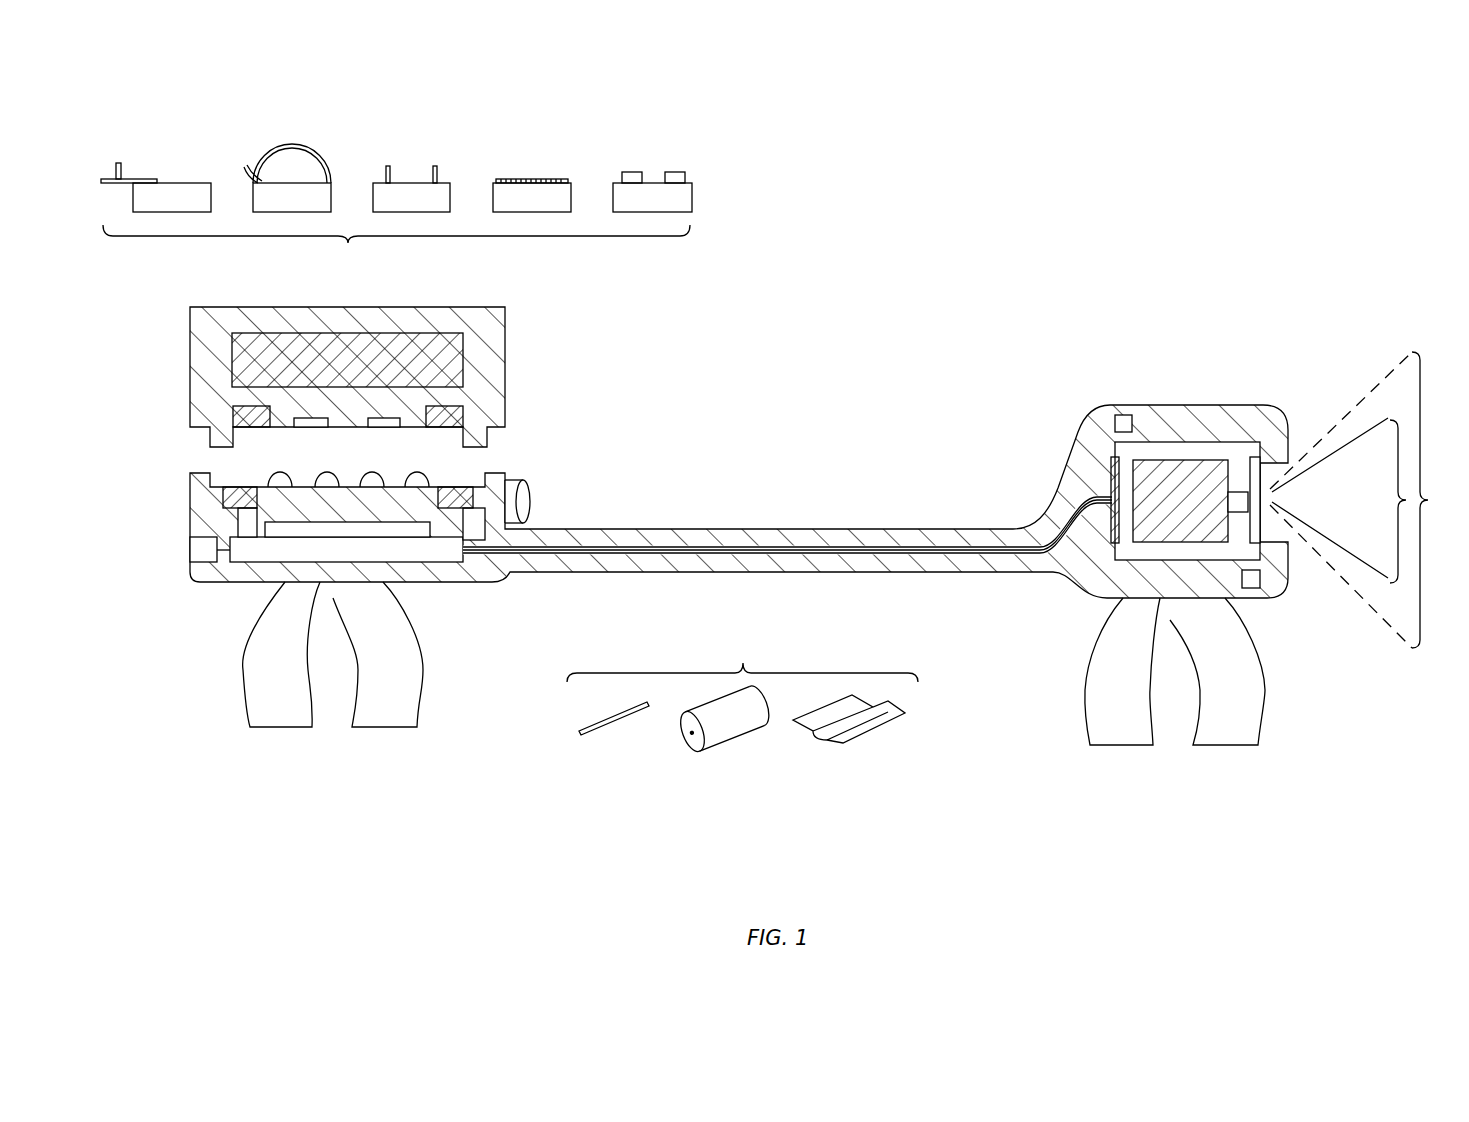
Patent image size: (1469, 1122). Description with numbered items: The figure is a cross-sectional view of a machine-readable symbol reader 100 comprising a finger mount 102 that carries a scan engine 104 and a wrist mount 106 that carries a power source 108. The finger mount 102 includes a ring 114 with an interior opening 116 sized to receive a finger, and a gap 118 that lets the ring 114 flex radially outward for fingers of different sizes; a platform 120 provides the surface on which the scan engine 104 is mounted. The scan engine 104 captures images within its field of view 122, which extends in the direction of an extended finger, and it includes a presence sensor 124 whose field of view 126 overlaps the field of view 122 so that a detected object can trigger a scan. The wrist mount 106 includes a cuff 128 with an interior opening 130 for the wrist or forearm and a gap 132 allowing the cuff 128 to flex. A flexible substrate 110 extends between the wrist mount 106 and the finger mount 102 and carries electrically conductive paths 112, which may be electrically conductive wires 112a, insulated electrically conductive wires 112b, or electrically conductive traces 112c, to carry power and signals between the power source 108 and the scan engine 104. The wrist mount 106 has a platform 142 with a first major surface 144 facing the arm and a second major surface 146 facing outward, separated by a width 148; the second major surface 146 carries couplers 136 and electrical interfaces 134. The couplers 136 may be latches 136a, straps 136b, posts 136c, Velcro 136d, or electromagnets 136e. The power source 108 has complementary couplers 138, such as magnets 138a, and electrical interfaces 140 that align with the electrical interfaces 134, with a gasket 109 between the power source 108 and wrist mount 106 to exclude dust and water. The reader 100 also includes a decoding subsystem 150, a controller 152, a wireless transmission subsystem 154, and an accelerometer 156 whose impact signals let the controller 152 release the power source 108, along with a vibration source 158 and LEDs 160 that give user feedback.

The machine-readable symbol reader 100 is at (1268, 260).
The finger mount 102 is at (1280, 672).
The scan engine 104 is at (1195, 460).
The wrist mount 106 is at (180, 696).
The power source 108 is at (190, 352).
The gasket 109 is at (477, 440).
The flexible substrate 110 is at (792, 529).
The electrically conductive paths 112 is at (737, 554).
The electrically conductive wires 112a is at (610, 726).
The insulated electrically conductive wires 112b is at (732, 741).
The electrically conductive traces 112c is at (872, 738).
The ring 114 is at (1227, 737).
The interior opening 116 is at (1140, 670).
The gap 118 is at (1172, 732).
The platform 120 is at (1237, 422).
The field of view 122 is at (1428, 500).
The presence sensor 124 is at (1238, 492).
The field of view 126 is at (1407, 500).
The cuff 128 is at (403, 672).
The interior opening 130 is at (323, 700).
The gap 132 is at (328, 718).
The electrical interfaces 134 is at (423, 476).
The couplers 136 is at (236, 487).
The latches 136a is at (143, 177).
The straps 136b is at (298, 143).
The posts 136c is at (435, 166).
The Velcro 136d is at (530, 178).
The electromagnets 136e is at (675, 172).
The couplers 138 is at (226, 408).
The magnets 138a is at (463, 415).
The electrical interfaces 140 is at (390, 428).
The platform 142 is at (190, 498).
The first major surface 144 is at (342, 483).
The second major surface 146 is at (418, 594).
The width 148 is at (188, 473).
The decoding subsystem 150 is at (467, 570).
The controller 152 is at (450, 565).
The wireless transmission subsystem 154 is at (203, 553).
The accelerometer 156 is at (528, 505).
The vibration source 158 is at (1122, 418).
The LEDs 160 is at (1258, 582).